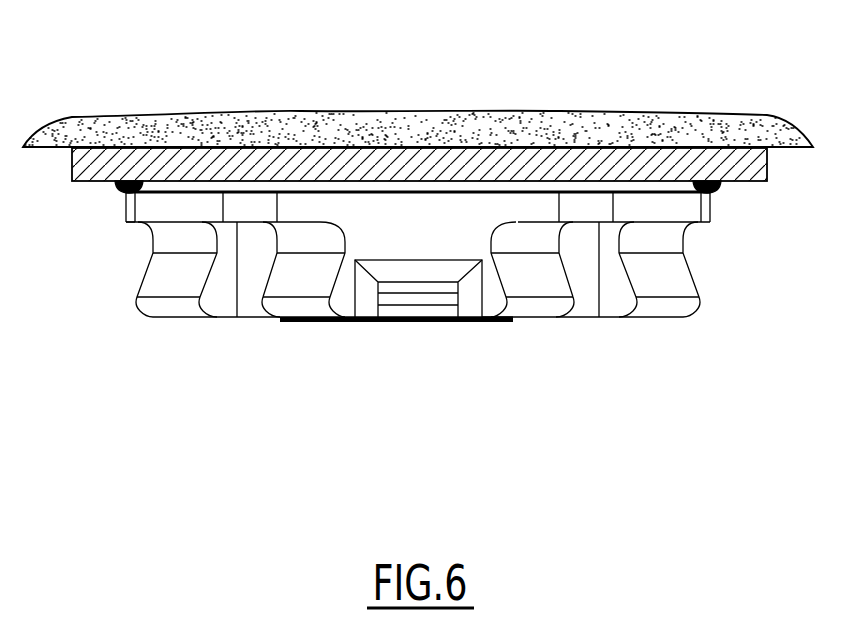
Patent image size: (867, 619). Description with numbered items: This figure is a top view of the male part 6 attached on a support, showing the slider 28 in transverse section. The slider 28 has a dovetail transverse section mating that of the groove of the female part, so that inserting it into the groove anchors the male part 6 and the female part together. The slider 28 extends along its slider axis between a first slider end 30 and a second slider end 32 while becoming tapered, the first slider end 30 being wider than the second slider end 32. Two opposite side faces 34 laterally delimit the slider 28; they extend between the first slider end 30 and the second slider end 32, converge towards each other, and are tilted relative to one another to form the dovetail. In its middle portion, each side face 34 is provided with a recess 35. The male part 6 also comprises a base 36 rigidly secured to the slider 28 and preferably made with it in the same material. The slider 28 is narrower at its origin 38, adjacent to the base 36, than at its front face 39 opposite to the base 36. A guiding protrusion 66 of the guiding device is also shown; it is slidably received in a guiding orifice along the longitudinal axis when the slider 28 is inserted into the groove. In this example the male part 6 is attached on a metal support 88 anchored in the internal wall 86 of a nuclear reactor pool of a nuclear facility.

The male part 6 is at (368, 403).
The slider 28 is at (482, 330).
The first slider end 30 is at (140, 308).
The second slider end 32 is at (487, 318).
The side faces 34 is at (303, 272).
The recess 35 is at (218, 300).
The base 36 is at (199, 207).
The origin 38 is at (362, 235).
The front face 39 is at (310, 323).
The guiding protrusion 66 is at (410, 318).
The internal wall 86 is at (187, 130).
The metal support 88 is at (497, 162).